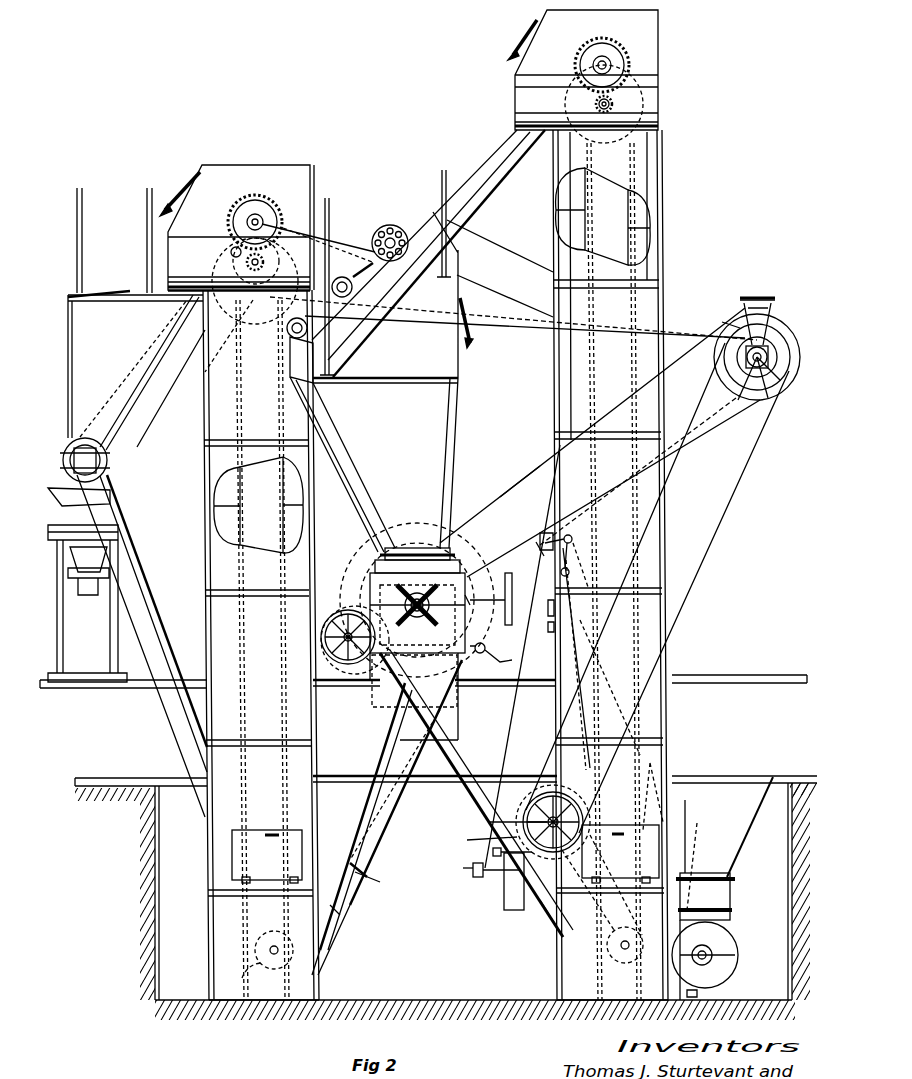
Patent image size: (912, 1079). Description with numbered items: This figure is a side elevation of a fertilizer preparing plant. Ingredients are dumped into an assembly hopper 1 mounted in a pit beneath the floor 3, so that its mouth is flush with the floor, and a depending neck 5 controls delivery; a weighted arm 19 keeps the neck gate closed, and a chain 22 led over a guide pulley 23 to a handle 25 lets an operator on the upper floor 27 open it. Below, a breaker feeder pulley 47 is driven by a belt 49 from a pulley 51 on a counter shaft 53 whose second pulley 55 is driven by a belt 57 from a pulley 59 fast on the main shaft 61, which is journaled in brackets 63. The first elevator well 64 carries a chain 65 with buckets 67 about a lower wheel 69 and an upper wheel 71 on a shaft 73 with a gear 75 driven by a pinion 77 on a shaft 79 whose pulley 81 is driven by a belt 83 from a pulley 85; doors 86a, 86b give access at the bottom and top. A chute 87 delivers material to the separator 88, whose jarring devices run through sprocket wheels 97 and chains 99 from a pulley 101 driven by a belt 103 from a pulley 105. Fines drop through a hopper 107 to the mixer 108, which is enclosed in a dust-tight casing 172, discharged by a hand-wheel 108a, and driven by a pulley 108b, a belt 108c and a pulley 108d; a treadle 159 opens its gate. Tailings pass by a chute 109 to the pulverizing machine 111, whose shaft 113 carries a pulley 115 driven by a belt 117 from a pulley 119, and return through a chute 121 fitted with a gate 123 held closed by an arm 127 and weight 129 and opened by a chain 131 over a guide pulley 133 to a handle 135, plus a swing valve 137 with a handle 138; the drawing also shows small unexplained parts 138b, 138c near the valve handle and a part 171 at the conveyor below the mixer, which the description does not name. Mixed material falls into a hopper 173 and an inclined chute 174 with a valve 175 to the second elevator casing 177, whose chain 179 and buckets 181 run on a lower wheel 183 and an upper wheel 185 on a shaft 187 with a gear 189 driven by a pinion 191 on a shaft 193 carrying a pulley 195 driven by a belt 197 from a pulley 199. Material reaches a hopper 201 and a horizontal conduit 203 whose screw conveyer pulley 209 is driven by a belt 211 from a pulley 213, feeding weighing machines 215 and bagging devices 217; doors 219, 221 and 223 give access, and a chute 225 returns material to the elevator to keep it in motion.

The assembly hopper 1 is at (725, 785).
The floor 3 is at (800, 775).
The depending neck 5 is at (732, 890).
The arm 19 is at (697, 860).
The chain 22 is at (665, 757).
The guide pulley 23 is at (575, 535).
The handle 25 is at (580, 560).
The floor 27 is at (500, 690).
The pulley 47 is at (738, 965).
The belt 49 is at (622, 965).
The pulley 51 is at (530, 808).
The counter shaft 53 is at (490, 822).
The second pulley 55 is at (467, 840).
The belt 57 is at (718, 527).
The pulley 59 is at (770, 400).
The main shaft 61 is at (713, 380).
The brackets 63 is at (778, 318).
The elevator well 64 is at (664, 708).
The chain 65 is at (640, 230).
The buckets 67 is at (650, 245).
The lower wheel 69 is at (602, 955).
The upper wheel 71 is at (628, 58).
The shaft 73 is at (612, 66).
The gear 75 is at (585, 38).
The pinion 77 is at (614, 104).
The shaft 79 is at (608, 110).
The pulley 81 is at (640, 145).
The belt 83 is at (664, 170).
The pulley 85 is at (772, 322).
The door 86a is at (615, 826).
The door 86b is at (512, 50).
The chute 87 is at (505, 152).
The separator 88 is at (455, 355).
The sprocket wheels 97 is at (308, 328).
The chains 99 is at (343, 277).
The pulley 101 is at (391, 225).
The belt 103 is at (503, 257).
The pulley 105 is at (770, 348).
The hopper 107 is at (457, 420).
The mixer 108 is at (452, 543).
The hand-wheel 108a is at (504, 597).
The pulley 108b is at (322, 642).
The belt 108c is at (522, 480).
The pulley 108d is at (722, 322).
The chute 109 is at (320, 440).
The pulverizing machine 111 is at (372, 575).
The shaft 113 is at (395, 610).
The pulley 115 is at (405, 600).
The belt 117 is at (640, 395).
The pulley 119 is at (745, 405).
The chute 121 is at (470, 795).
The gate 123 is at (504, 905).
The arm 127 is at (470, 872).
The weight 129 is at (480, 880).
The chain 131 is at (509, 722).
The guide pulley 133 is at (548, 533).
The handle 135 is at (540, 548).
The swing valve 137 is at (545, 915).
The handle 138 is at (572, 700).
The pin 138b is at (556, 606).
The pin 138c is at (556, 628).
The treadle 159 is at (490, 656).
The conveyor casing 171 is at (372, 792).
The dust-tight casing 172 is at (447, 520).
The hopper 173 is at (400, 700).
The inclined chute 174 is at (385, 768).
The valve 175 is at (345, 905).
The tight casing 177 is at (212, 567).
The chain 179 is at (235, 507).
The buckets 181 is at (235, 490).
The lower wheel 183 is at (257, 960).
The upper wheel 185 is at (285, 192).
The shaft 187 is at (252, 220).
The gear 189 is at (251, 212).
The pinion 191 is at (231, 250).
The shaft 193 is at (247, 263).
The pulley 195 is at (235, 302).
The belt 197 is at (520, 328).
The pulley 199 is at (782, 382).
The hopper 201 is at (70, 345).
The horizontal conduit 203 is at (70, 447).
The pulley 209 is at (70, 472).
The belt 211 is at (150, 430).
The pulley 213 is at (330, 250).
The weighing machines 215 is at (72, 505).
The bagging devices 217 is at (86, 592).
The door 219 is at (187, 197).
The door 221 is at (232, 850).
The door 223 is at (128, 290).
The chute 225 is at (165, 712).